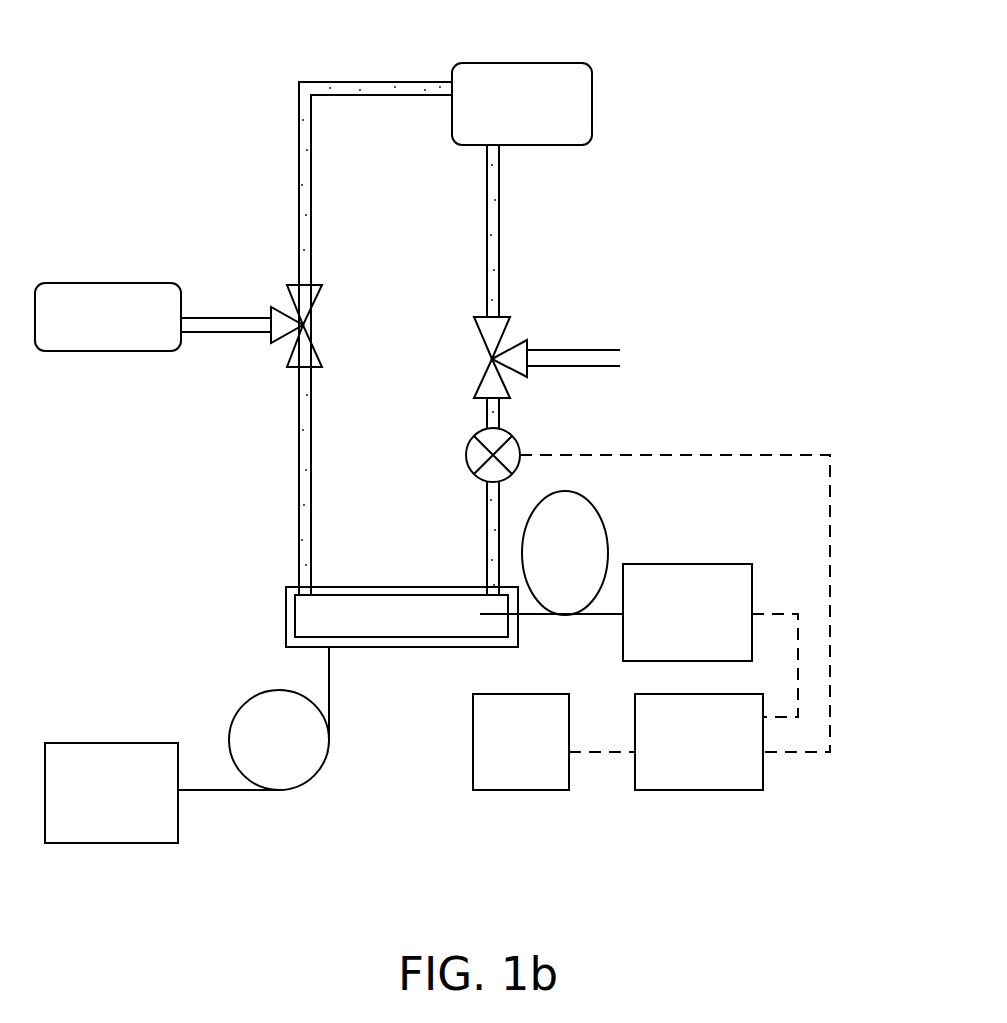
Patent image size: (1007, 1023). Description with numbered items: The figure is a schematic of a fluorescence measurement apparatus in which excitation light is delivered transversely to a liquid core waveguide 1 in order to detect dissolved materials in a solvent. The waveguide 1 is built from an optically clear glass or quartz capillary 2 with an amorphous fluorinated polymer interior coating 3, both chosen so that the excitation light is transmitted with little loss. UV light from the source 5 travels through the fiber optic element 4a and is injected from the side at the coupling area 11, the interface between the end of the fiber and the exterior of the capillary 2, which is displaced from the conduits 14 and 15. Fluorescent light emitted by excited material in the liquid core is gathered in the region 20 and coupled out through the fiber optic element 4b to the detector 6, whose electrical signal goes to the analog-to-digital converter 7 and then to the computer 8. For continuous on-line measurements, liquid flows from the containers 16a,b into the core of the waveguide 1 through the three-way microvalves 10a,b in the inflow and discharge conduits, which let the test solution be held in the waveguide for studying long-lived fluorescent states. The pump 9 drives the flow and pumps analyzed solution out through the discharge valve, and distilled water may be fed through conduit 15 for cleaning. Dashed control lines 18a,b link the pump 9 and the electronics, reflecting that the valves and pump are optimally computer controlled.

The liquid core waveguide 1 is at (348, 648).
The capillary 2 is at (362, 643).
The interior coating 3 is at (383, 597).
The fiber optic element 4a is at (215, 792).
The fiber optic element 4b is at (607, 530).
The light source 5 is at (100, 843).
The detector 6 is at (752, 578).
The analog-to-digital converter 7 is at (713, 790).
The computer 8 is at (569, 753).
The pump 9 is at (517, 440).
The three-way microvalves 10a,b is at (313, 307).
The coupling area 11 is at (328, 648).
The conduit 14 is at (299, 478).
The conduit 15 is at (485, 525).
The containers 16a,b is at (453, 70).
The control lines 18a,b is at (797, 688).
The region 20 is at (480, 620).